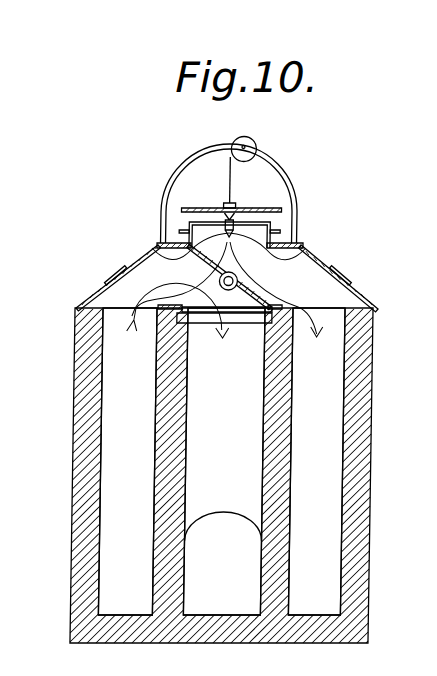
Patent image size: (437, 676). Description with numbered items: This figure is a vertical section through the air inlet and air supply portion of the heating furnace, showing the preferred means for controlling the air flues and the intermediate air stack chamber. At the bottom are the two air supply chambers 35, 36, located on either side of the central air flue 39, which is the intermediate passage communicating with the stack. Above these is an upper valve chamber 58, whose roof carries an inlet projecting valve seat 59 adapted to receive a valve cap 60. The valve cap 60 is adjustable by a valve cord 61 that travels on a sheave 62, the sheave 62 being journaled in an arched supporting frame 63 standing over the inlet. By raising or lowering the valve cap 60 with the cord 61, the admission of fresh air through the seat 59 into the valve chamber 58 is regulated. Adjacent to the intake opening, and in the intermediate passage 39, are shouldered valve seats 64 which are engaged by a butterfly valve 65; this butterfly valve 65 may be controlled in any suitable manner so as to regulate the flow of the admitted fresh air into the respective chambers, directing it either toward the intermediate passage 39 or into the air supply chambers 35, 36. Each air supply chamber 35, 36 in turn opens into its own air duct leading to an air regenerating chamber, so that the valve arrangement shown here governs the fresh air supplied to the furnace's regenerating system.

The air supply chamber 35 is at (316, 461).
The air supply chamber 36 is at (127, 461).
The air flue 39 is at (222, 461).
The upper valve chamber 58 is at (323, 287).
The inlet projecting valve seat 59 is at (272, 223).
The valve cap 60 is at (188, 206).
The valve cord 61 is at (227, 178).
The sheave 62 is at (249, 140).
The arched supporting frame 63 is at (276, 165).
The shouldered valve seats 64 is at (155, 245).
The butterfly valve 65 is at (147, 255).